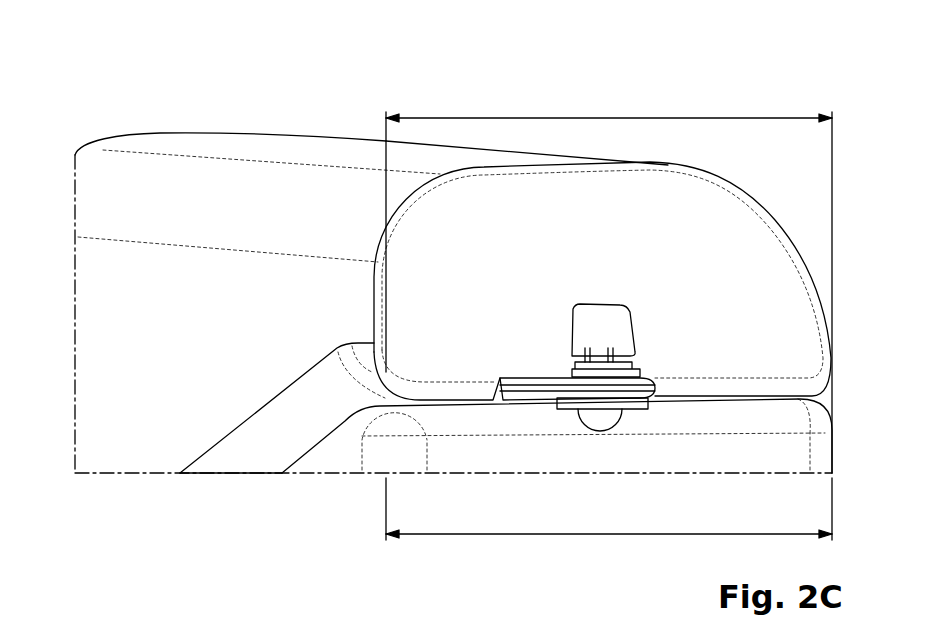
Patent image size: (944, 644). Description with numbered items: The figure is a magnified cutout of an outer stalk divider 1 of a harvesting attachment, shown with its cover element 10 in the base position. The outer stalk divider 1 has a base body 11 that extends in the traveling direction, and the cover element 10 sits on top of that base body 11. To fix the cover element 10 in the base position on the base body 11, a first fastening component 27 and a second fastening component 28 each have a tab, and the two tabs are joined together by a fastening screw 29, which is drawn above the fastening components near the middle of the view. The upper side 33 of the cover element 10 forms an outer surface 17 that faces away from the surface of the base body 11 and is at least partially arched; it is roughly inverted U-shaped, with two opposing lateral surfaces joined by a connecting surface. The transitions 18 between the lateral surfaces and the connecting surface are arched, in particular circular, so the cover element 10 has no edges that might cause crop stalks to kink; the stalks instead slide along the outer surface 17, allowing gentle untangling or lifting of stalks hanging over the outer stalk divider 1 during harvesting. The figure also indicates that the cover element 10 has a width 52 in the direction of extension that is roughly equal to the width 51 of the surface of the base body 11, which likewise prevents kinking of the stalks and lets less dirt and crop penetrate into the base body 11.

The outer stalk divider 1 is at (450, 95).
The cover element 10 is at (260, 462).
The base body 11 is at (610, 463).
The outer surface 17 is at (320, 126).
The transitions 18 is at (425, 217).
The first fastening component 27 is at (637, 412).
The second fastening component 28 is at (640, 378).
The fastening screw 29 is at (603, 317).
The upper side 33 is at (246, 103).
The width of the surface of the base body 51 is at (503, 537).
The width of the cover element 52 is at (618, 114).